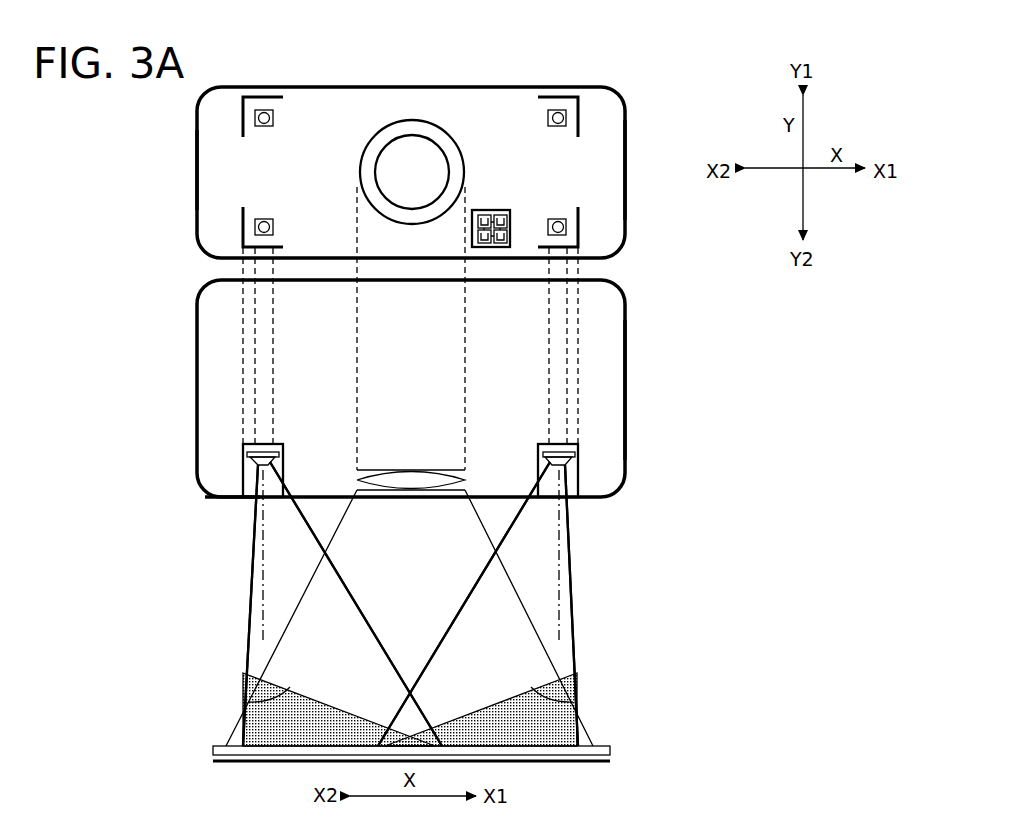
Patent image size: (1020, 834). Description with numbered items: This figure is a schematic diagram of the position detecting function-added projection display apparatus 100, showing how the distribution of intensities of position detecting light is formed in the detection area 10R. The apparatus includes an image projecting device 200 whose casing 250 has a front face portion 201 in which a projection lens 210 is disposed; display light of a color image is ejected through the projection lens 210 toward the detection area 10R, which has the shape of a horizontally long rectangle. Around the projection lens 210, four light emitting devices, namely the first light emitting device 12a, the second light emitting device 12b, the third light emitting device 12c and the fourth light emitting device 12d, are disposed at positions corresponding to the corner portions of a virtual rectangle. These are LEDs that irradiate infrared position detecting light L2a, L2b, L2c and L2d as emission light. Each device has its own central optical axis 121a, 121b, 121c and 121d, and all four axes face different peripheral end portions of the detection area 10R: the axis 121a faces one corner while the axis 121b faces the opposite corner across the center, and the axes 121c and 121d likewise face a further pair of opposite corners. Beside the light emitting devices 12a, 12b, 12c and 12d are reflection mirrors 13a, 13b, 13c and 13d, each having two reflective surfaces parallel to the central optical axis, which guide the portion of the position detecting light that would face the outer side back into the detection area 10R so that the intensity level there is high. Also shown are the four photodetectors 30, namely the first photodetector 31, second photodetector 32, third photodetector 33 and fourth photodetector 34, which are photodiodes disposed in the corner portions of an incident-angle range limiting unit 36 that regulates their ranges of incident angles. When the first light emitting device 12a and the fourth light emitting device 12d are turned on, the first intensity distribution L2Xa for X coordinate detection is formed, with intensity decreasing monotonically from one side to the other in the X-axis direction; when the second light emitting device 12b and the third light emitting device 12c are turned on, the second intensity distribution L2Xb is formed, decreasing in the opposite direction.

The position detecting function-added projection display apparatus 100 is at (606, 57).
The image projecting device 200 is at (640, 187).
The front face portion 201 is at (207, 163).
The casing 250 is at (626, 147).
The projection lens 210 is at (424, 147).
The first light emitting device 12a is at (559, 455).
The second light emitting device 12b is at (274, 116).
The third light emitting device 12c is at (265, 455).
The fourth light emitting device 12d is at (547, 113).
The reflection mirror 13a is at (580, 230).
The reflection mirror 13b is at (253, 97).
The reflection mirror 13c is at (243, 232).
The reflection mirror 13d is at (582, 115).
The photodetectors 30 is at (482, 225).
The first photodetector 31 is at (503, 247).
The second photodetector 32 is at (483, 214).
The third photodetector 33 is at (478, 247).
The fourth photodetector 34 is at (505, 216).
The incident-angle range limiting unit 36 is at (510, 233).
The central optical axis 121a is at (560, 597).
The central optical axis 121b is at (262, 596).
The central optical axis 121c is at (250, 605).
The central optical axis 121d is at (571, 605).
The position detecting light L2a is at (573, 655).
The position detecting light L2b is at (365, 625).
The position detecting light L2c is at (356, 604).
The position detecting light L2d is at (464, 604).
The first intensity distribution L2Xa is at (573, 702).
The second intensity distribution L2Xb is at (248, 702).
The detection area 10R is at (430, 632).